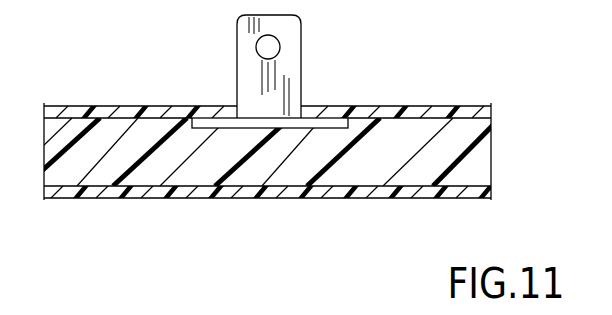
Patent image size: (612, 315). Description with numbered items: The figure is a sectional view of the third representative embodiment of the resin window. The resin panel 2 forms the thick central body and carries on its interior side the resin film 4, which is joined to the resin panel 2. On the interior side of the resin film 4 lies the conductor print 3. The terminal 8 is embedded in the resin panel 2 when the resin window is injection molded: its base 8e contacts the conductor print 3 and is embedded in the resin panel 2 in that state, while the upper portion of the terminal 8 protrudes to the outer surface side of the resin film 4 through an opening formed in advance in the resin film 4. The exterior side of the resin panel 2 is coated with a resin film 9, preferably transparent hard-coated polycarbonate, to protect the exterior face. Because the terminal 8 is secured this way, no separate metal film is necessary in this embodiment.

The resin panel 2 is at (188, 176).
The conductor print 3 is at (99, 104).
The resin film 4 is at (161, 104).
The terminal 8 is at (292, 68).
The base 8e is at (290, 120).
The resin film 9 is at (396, 192).